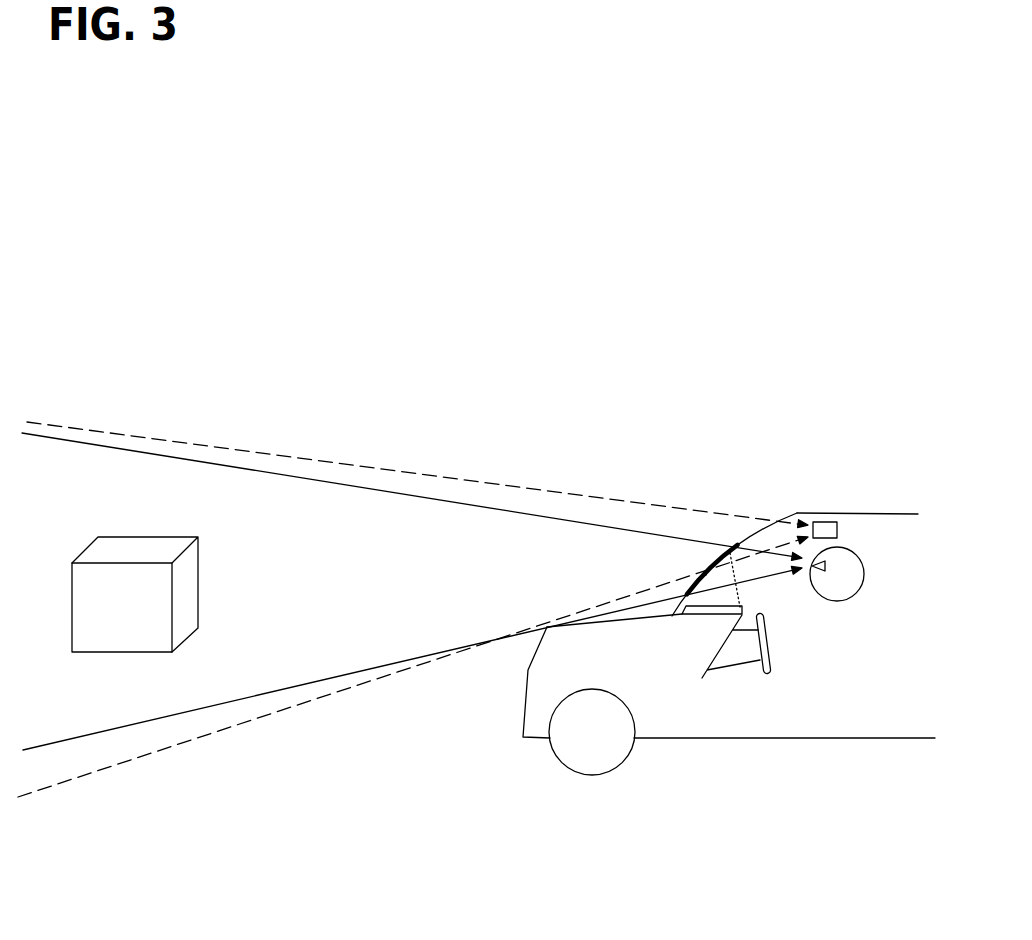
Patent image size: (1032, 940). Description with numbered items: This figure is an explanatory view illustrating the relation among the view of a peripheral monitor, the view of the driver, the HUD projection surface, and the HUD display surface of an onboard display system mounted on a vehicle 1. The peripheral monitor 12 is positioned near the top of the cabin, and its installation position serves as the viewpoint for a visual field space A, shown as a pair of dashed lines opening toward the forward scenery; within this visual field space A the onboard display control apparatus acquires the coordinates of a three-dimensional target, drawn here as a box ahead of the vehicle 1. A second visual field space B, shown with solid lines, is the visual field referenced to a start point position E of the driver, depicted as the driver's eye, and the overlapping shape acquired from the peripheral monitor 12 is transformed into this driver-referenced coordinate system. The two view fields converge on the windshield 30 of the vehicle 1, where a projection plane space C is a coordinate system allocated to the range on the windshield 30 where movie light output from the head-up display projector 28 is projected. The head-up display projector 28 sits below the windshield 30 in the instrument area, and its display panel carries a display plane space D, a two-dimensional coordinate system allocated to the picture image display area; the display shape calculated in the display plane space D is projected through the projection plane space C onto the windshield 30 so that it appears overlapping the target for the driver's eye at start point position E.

The vehicle 1 is at (745, 740).
The peripheral monitor 12 is at (822, 522).
The head-up display projector 28 is at (688, 610).
The windshield 30 is at (752, 528).
The visual field space A is at (642, 502).
The visual field space B is at (463, 505).
The projection plane space C is at (695, 575).
The display plane space D is at (708, 608).
The start point position E is at (807, 568).